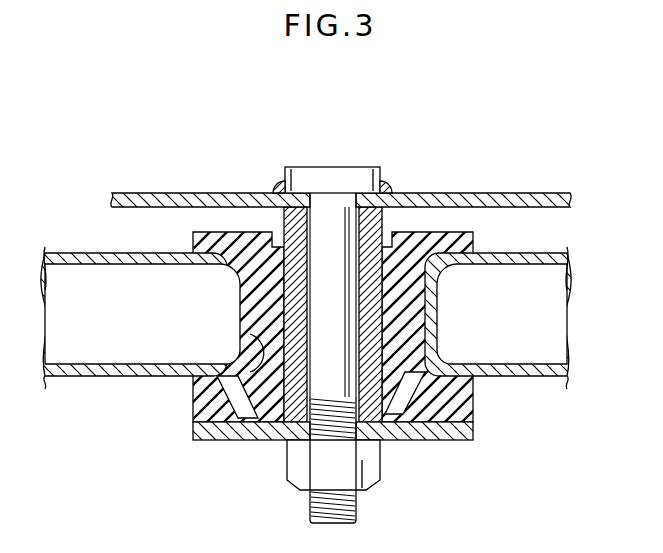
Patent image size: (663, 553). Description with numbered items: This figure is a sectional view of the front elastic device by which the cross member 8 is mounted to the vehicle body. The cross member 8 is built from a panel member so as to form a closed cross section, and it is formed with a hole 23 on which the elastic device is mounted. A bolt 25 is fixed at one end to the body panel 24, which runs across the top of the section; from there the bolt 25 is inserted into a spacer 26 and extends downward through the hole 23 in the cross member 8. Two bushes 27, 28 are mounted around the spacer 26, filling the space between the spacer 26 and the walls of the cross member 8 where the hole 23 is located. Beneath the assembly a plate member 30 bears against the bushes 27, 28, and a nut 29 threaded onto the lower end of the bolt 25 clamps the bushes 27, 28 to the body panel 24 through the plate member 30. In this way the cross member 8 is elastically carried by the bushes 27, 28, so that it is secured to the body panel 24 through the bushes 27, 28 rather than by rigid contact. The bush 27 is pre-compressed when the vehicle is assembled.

The cross member 8 is at (130, 357).
The hole 23 is at (260, 348).
The body panel 24 is at (175, 192).
The bolt 25 is at (358, 522).
The spacer 26 is at (290, 418).
The bush 27 is at (465, 433).
The bush 28 is at (443, 240).
The nut 29 is at (381, 474).
The plate member 30 is at (220, 432).